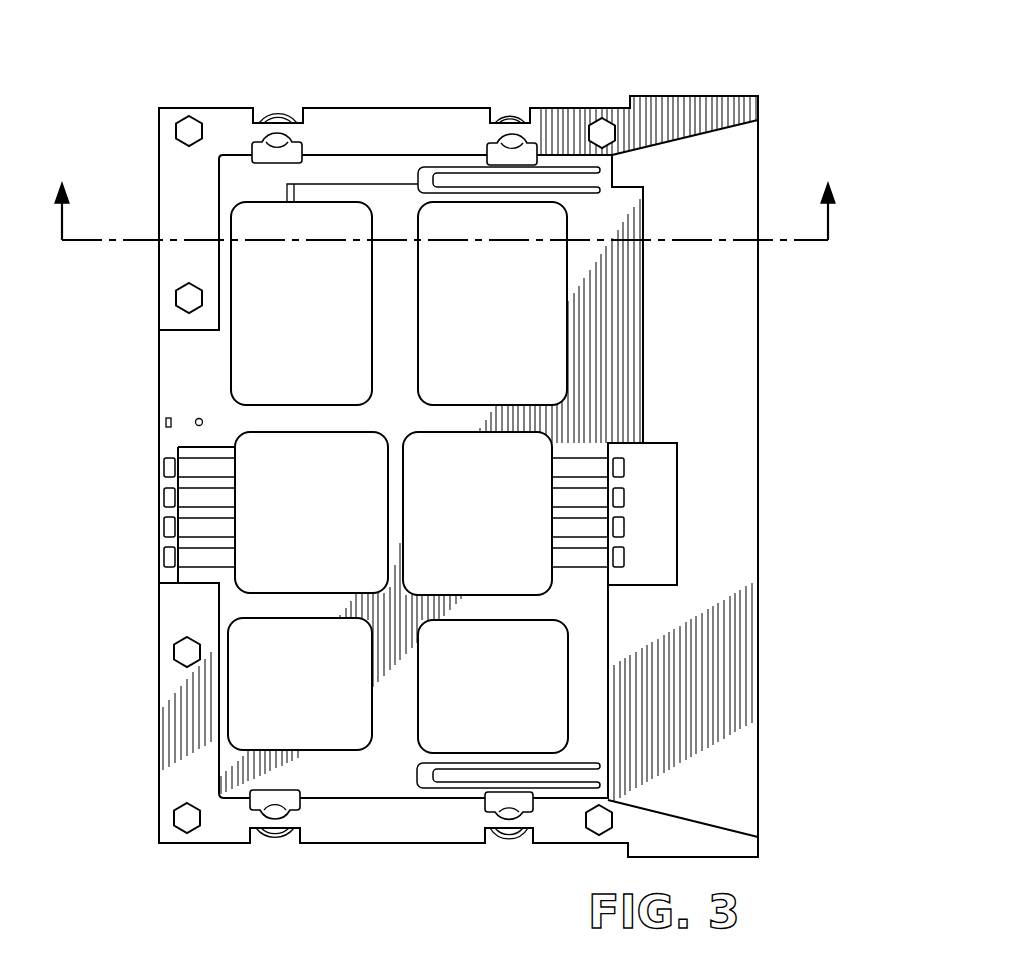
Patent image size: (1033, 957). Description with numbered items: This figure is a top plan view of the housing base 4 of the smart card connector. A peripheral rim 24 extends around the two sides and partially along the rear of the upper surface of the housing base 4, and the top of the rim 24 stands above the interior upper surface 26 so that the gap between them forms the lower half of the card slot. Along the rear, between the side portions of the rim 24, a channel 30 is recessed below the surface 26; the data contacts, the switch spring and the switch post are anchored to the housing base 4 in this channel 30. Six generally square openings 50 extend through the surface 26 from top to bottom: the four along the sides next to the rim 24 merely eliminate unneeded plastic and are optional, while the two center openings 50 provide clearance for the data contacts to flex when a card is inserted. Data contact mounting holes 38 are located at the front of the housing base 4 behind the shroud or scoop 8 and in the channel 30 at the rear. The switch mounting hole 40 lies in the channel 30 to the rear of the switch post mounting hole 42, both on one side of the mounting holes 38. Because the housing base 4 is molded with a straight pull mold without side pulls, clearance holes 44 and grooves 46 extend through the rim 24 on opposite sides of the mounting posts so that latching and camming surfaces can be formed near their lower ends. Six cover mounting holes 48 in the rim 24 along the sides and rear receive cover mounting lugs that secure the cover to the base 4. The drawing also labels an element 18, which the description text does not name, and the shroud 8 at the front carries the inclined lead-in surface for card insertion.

The housing base 4 is at (104, 78).
The shroud or scoop 8 is at (718, 312).
The retaining spring 18 is at (442, 184).
The peripheral rim 24 is at (344, 127).
The interior upper surface 26 is at (386, 271).
The channel 30 is at (178, 351).
The data contact mounting holes 38 is at (168, 526).
The switch mounting hole 40 is at (166, 422).
The switch post mounting hole 42 is at (198, 416).
The clearance holes 44 is at (519, 154).
The grooves 46 is at (298, 114).
The cover mounting holes 48 is at (180, 660).
The square openings 50 is at (445, 745).